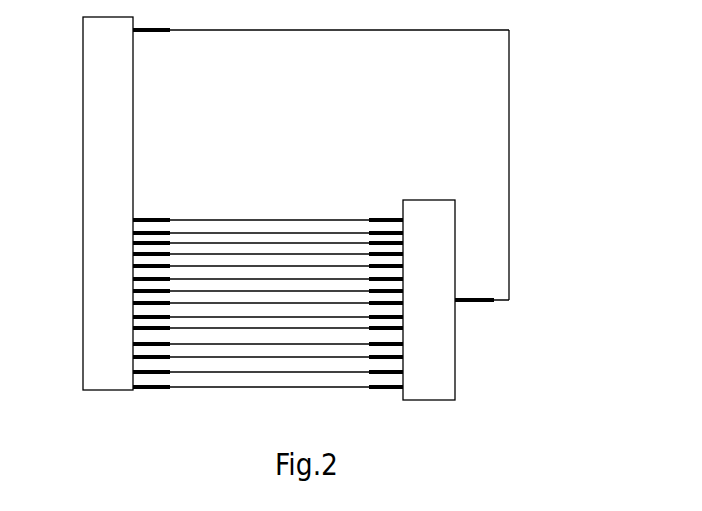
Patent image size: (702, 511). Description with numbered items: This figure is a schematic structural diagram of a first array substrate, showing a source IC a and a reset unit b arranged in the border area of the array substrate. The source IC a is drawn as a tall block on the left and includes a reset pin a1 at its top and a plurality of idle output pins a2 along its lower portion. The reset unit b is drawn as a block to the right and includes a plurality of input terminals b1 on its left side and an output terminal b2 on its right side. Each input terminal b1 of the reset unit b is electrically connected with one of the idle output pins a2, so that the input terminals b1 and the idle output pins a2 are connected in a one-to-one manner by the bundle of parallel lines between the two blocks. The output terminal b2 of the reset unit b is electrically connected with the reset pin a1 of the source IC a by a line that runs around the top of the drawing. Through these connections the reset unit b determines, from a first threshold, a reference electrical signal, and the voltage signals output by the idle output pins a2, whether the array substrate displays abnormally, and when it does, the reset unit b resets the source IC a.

The source IC a is at (108, 203).
The reset unit b is at (429, 300).
The reset pin a1 is at (148, 32).
The idle output pins a2 is at (145, 220).
The input terminals b1 is at (380, 218).
The output terminal b2 is at (468, 303).